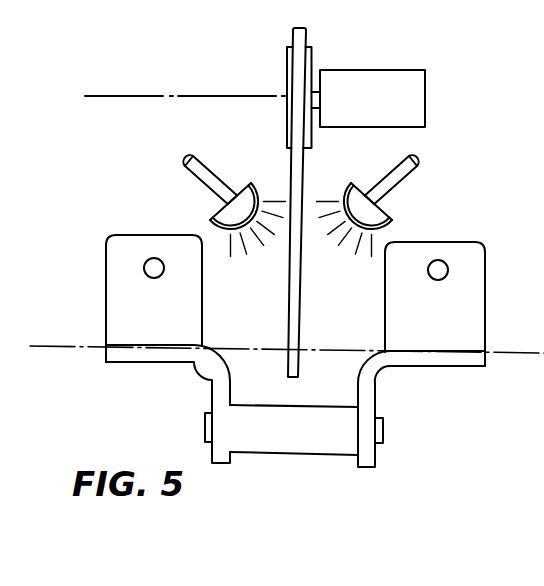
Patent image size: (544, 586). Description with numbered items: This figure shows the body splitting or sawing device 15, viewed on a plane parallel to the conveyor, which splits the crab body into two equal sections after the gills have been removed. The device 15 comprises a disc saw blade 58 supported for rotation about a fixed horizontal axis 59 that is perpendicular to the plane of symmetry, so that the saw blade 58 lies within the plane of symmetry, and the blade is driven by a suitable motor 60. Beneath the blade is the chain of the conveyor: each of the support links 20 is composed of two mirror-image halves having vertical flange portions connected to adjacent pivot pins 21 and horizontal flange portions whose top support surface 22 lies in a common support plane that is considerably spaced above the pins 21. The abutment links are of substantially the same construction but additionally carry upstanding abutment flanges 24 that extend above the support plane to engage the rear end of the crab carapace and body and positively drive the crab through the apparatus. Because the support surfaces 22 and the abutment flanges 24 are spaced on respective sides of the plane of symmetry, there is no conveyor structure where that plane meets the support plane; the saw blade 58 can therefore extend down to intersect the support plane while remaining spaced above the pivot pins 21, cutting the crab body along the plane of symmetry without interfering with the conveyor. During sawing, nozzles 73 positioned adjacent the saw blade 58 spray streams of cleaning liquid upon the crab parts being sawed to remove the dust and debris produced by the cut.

The body splitting device 15 is at (466, 106).
The support links 20 is at (368, 458).
The pivot pins 21 is at (295, 440).
The top support surface 22 is at (458, 350).
The abutment flanges 24 is at (118, 272).
The disc saw blade 58 is at (304, 172).
The fixed horizontal axis 59 is at (129, 94).
The motor 60 is at (393, 70).
The nozzles 73 is at (213, 215).